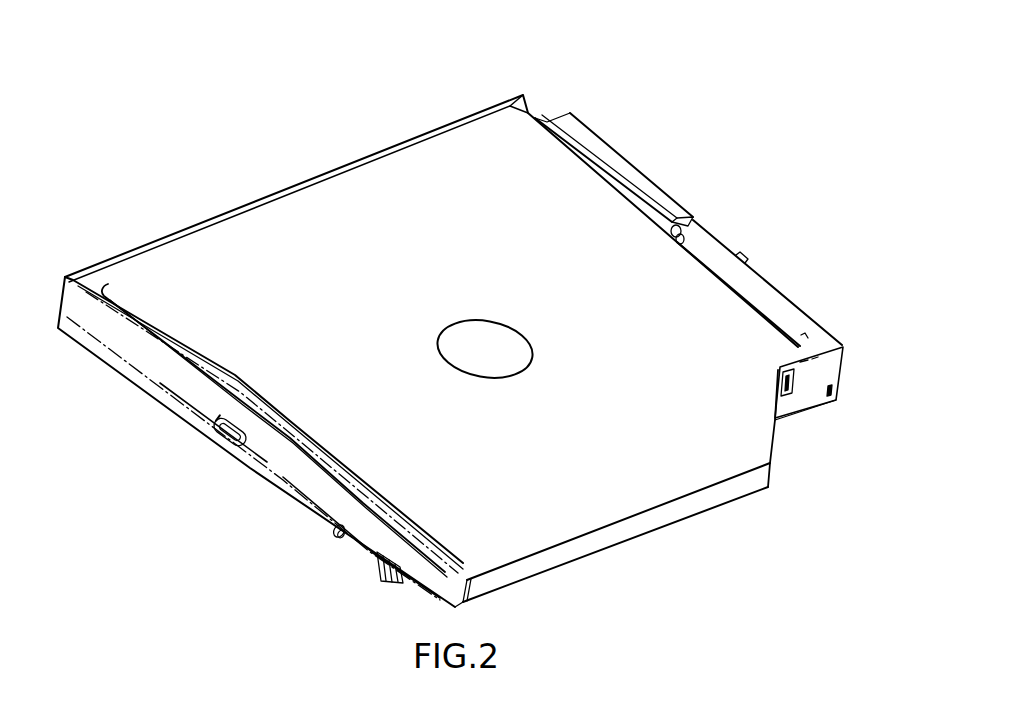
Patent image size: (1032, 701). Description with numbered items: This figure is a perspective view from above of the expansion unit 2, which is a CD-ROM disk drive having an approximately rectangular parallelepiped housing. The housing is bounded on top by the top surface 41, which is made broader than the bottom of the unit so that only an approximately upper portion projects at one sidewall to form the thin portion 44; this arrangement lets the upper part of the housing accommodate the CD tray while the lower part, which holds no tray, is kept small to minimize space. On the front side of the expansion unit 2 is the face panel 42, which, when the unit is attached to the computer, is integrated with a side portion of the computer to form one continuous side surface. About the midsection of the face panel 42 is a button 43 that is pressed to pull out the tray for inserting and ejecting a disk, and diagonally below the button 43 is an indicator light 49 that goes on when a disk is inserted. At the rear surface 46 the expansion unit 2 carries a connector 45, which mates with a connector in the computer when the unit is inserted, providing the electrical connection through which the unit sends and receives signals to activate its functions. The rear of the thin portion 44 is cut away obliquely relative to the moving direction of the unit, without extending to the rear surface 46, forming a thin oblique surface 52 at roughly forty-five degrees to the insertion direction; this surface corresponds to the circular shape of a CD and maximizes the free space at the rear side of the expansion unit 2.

The expansion unit 2 is at (664, 126).
The top surface 41 is at (303, 215).
The face panel 42 is at (266, 470).
The button 43 is at (207, 438).
The thin portion 44 is at (566, 553).
The connector 45 is at (648, 183).
The rear surface 46 is at (785, 304).
The indicator light 49 is at (334, 540).
The thin oblique surface 52 is at (775, 453).